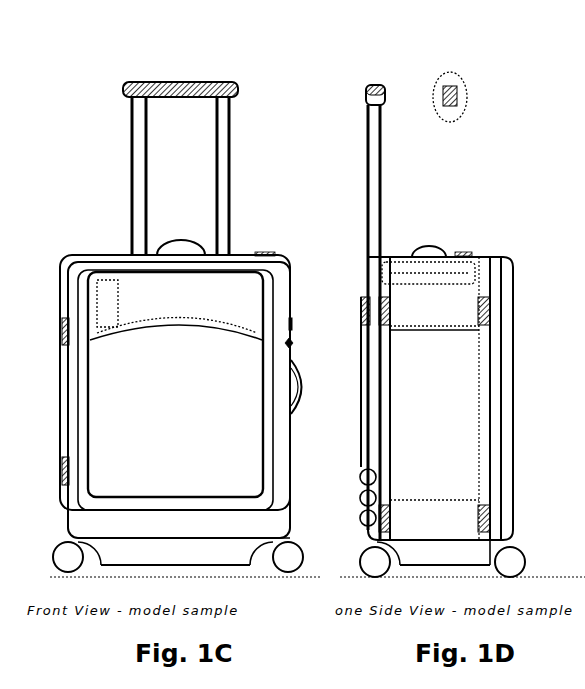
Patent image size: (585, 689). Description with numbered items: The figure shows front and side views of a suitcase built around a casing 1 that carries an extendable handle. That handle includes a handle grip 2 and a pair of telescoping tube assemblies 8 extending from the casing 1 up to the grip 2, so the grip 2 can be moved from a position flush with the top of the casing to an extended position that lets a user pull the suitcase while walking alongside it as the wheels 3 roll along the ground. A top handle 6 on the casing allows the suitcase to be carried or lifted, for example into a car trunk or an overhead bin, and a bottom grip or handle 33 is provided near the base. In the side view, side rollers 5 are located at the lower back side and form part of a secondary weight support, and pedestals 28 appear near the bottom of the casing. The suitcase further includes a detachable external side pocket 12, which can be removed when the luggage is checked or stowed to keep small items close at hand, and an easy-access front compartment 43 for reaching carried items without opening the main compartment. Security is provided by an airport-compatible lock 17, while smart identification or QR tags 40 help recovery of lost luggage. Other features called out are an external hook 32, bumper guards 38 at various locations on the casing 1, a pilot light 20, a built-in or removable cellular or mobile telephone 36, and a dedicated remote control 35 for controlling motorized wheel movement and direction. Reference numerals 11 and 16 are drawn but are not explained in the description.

In FIG. 1D, the casing 1 is at (475, 563).
In FIG. 1C, the handle grip 2 is at (122, 91).
In FIG. 1C, the wheels 3 is at (178, 557).
In FIG. 1D, the wheels 3 is at (442, 562).
In FIG. 1D, the side rollers 5 is at (360, 480).
In FIG. 1C, the top handle 6 is at (181, 240).
In FIG. 1C, the telescoping tube assemblies 8 is at (213, 148).
In FIG. 1C, the telescoping handle 11 is at (205, 82).
In FIG. 1D, the detachable external side pocket 12 is at (360, 362).
In FIG. 1C, the luggage body 16 is at (102, 526).
In FIG. 1D, the luggage body 16 is at (388, 276).
In FIG. 1C, the lock 17 is at (294, 330).
In FIG. 1C, the pilot light 20 is at (296, 380).
In FIG. 1D, the pedestals 28 is at (476, 518).
In FIG. 1C, the external hook 32 is at (62, 362).
In FIG. 1C, the bottom grip or handle 33 is at (180, 565).
In FIG. 1D, the dedicated remote control 35 is at (447, 72).
In FIG. 1C, the built-in or removable cellular or mobile telephone 36 is at (110, 300).
In FIG. 1C, the bumper guards 38 is at (56, 470).
In FIG. 1C, the smart identification or QR tags 40 is at (14, 478).
In FIG. 1D, the easy-access front compartment 43 is at (516, 275).